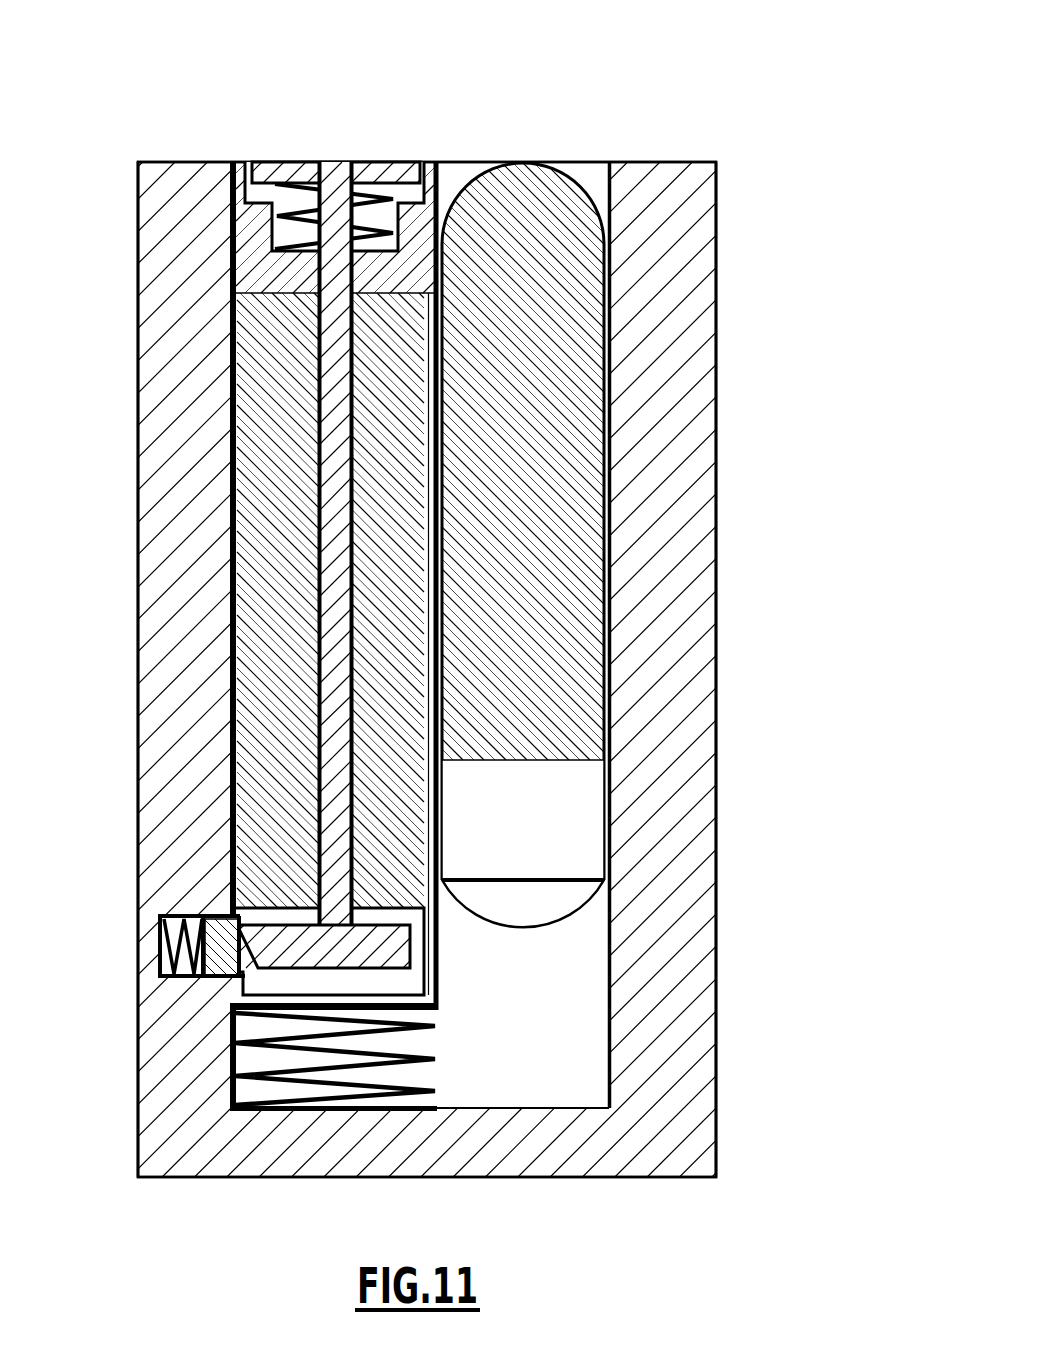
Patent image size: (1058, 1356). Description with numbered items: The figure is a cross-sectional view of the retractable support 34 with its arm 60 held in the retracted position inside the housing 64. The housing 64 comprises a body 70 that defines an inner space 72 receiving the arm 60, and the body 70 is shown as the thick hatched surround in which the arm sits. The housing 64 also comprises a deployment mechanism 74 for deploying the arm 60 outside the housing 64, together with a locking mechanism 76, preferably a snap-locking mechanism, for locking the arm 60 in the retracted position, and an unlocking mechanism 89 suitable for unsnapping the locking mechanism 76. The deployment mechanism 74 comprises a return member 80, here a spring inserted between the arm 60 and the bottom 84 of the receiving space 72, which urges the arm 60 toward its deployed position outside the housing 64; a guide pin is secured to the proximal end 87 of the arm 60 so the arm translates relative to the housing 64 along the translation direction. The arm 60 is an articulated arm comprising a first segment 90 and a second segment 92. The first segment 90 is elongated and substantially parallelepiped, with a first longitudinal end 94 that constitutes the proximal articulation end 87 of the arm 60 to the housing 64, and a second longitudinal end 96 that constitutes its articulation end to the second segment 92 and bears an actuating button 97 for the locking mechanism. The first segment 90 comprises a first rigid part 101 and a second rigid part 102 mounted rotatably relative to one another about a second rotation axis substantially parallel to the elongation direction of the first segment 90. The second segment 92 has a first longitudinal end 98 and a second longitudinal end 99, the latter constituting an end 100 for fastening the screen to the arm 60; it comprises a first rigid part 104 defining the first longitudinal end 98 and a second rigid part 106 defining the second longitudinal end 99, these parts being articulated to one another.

The retractable support 34 is at (670, 60).
The arm 60 is at (458, 148).
The housing 64 is at (704, 1057).
The body 70 is at (698, 1010).
The inner space 72 is at (605, 1036).
The deployment mechanism 74 is at (208, 1090).
The locking mechanism 76 is at (181, 996).
The return member 80 is at (348, 1111).
The bottom 84 is at (475, 1100).
The proximal end 87 is at (282, 1012).
The unlocking mechanism 89 is at (408, 978).
The first segment 90 is at (238, 643).
The second segment 92 is at (630, 538).
The first longitudinal end 94 is at (335, 1006).
The second longitudinal end 96 is at (245, 162).
The actuating button 97 is at (313, 172).
The first longitudinal end 98 is at (536, 163).
The second longitudinal end 99 is at (568, 888).
The fastening end 100 is at (523, 820).
The first rigid part 101 is at (267, 805).
The second rigid part 102 is at (250, 260).
The first rigid part 104 is at (588, 422).
The second rigid part 106 is at (539, 912).